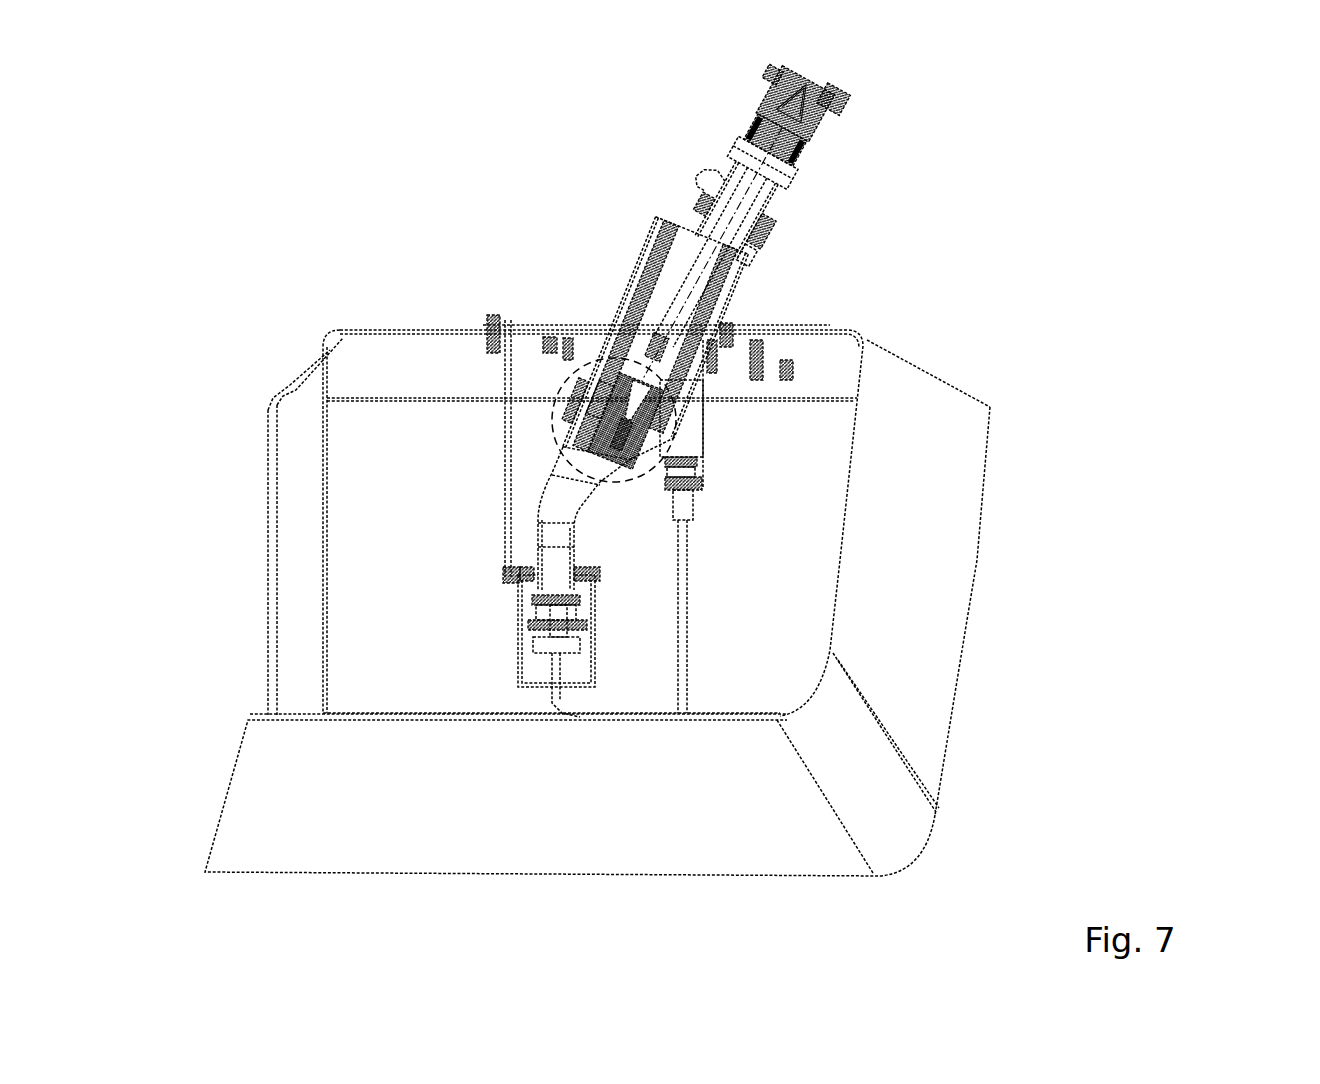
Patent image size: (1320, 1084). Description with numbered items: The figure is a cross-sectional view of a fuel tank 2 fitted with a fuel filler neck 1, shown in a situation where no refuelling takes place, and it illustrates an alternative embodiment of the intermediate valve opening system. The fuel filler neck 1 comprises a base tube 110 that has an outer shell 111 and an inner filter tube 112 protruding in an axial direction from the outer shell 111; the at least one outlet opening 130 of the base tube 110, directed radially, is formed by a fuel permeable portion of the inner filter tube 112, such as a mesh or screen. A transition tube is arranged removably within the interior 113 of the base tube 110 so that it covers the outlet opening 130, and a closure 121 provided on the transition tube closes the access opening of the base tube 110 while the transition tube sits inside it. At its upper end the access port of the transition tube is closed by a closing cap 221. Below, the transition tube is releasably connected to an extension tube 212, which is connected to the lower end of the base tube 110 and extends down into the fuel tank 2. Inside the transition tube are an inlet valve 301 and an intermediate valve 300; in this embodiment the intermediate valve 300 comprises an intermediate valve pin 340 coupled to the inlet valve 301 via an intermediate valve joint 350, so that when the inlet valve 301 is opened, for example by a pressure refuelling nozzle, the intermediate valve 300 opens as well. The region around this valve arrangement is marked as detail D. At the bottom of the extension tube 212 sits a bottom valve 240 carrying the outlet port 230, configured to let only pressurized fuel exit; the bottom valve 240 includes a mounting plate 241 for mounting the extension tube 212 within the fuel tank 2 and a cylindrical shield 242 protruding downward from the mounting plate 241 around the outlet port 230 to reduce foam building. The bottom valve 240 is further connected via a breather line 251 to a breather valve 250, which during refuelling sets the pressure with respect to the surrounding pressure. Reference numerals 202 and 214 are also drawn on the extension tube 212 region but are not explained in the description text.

The fuel filler neck 1 is at (709, 474).
The fuel tank 2 is at (1132, 692).
The base tube 110 is at (738, 305).
The outer shell 111 is at (740, 282).
The inner filter tube 112 is at (601, 398).
The interior 113 is at (680, 296).
The closure 121 is at (762, 237).
The outlet opening 130 is at (560, 398).
The pipe flange 202 is at (567, 563).
The extension tube 212 is at (536, 528).
The hose section 214 is at (567, 513).
The closing cap 221 is at (823, 103).
The outlet port 230 is at (540, 662).
The bottom valve 240 is at (516, 612).
The mounting plate 241 is at (590, 583).
The cylindrical shield 242 is at (593, 653).
The breather valve 250 is at (712, 451).
The breather line 251 is at (567, 705).
The intermediate valve 300 is at (637, 406).
The inlet valve 301 is at (771, 104).
The intermediate valve pin 340 is at (642, 380).
The intermediate valve joint 350 is at (667, 351).
The detail region D is at (553, 415).